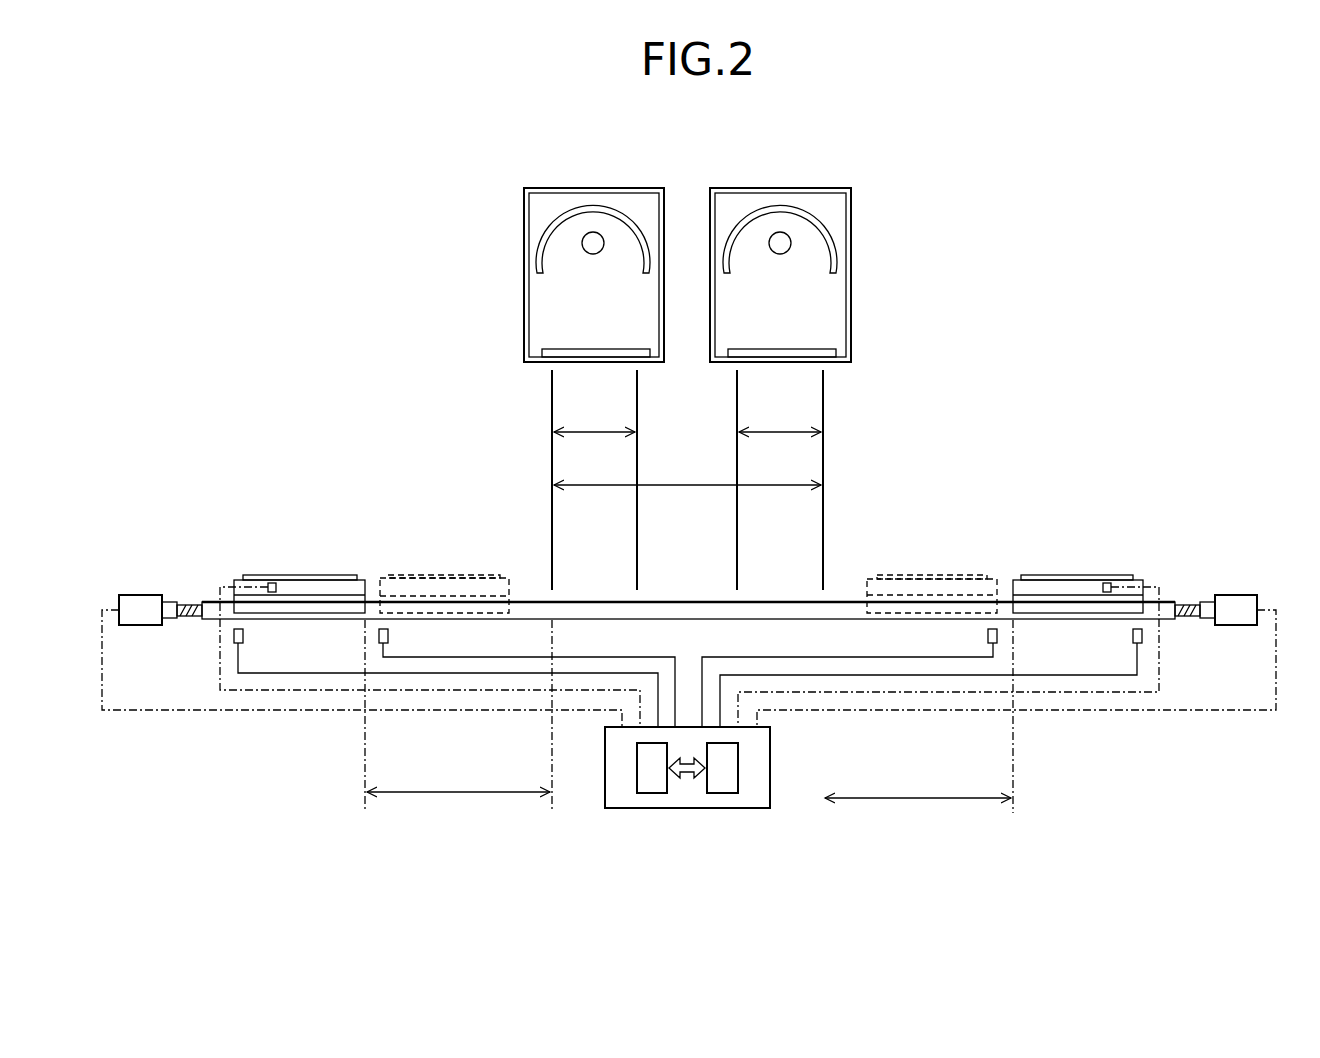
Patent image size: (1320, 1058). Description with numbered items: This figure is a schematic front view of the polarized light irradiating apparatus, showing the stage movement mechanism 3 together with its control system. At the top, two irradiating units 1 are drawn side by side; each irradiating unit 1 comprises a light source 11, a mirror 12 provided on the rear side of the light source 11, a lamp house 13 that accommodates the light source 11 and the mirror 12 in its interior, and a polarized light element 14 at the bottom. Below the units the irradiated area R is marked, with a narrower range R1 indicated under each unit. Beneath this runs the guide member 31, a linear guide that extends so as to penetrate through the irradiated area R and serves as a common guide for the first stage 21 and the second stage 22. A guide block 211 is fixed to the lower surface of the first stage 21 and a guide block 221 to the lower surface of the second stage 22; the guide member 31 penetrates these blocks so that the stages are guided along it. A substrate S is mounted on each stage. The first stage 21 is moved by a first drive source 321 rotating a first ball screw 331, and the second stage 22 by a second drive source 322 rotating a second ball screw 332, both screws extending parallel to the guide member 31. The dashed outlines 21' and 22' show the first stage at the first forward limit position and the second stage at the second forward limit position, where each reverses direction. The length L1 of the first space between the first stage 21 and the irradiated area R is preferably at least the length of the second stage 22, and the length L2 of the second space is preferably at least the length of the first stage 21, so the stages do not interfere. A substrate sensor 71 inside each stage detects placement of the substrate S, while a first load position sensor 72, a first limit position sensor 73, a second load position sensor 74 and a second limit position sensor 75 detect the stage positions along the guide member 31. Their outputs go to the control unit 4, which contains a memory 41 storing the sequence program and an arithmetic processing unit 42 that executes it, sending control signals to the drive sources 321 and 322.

The irradiating unit 1 is at (500, 175).
The light source 11 is at (593, 232).
The mirror 12 is at (633, 212).
The lamp house 13 is at (524, 235).
The polarized light element 14 is at (567, 349).
The stage movement mechanism 3 is at (1242, 452).
The guide member 31 is at (678, 607).
The first stage 21 is at (299, 564).
The guide block 211 is at (300, 605).
The second stage 22 is at (1078, 577).
The guide block 221 is at (1080, 605).
The first stage at first forward limit position 21' is at (932, 554).
The second stage at second forward limit position 22' is at (444, 551).
The first drive source 321 is at (130, 595).
The second drive source 322 is at (1235, 595).
The first ball screw 331 is at (185, 605).
The second ball screw 332 is at (1188, 605).
The control unit 4 is at (683, 810).
The memory 41 is at (650, 795).
The arithmetic processing unit 42 is at (722, 795).
The substrate sensor 71 is at (270, 582).
The first load position sensor 72 is at (234, 636).
The first limit position sensor 73 is at (988, 636).
The second load position sensor 74 is at (1142, 634).
The second limit position sensor 75 is at (388, 636).
The substrate S is at (325, 575).
The irradiated area R is at (590, 485).
The unit reading range R1 is at (590, 431).
The length of first space L1 is at (458, 727).
The length of second space L2 is at (919, 730).